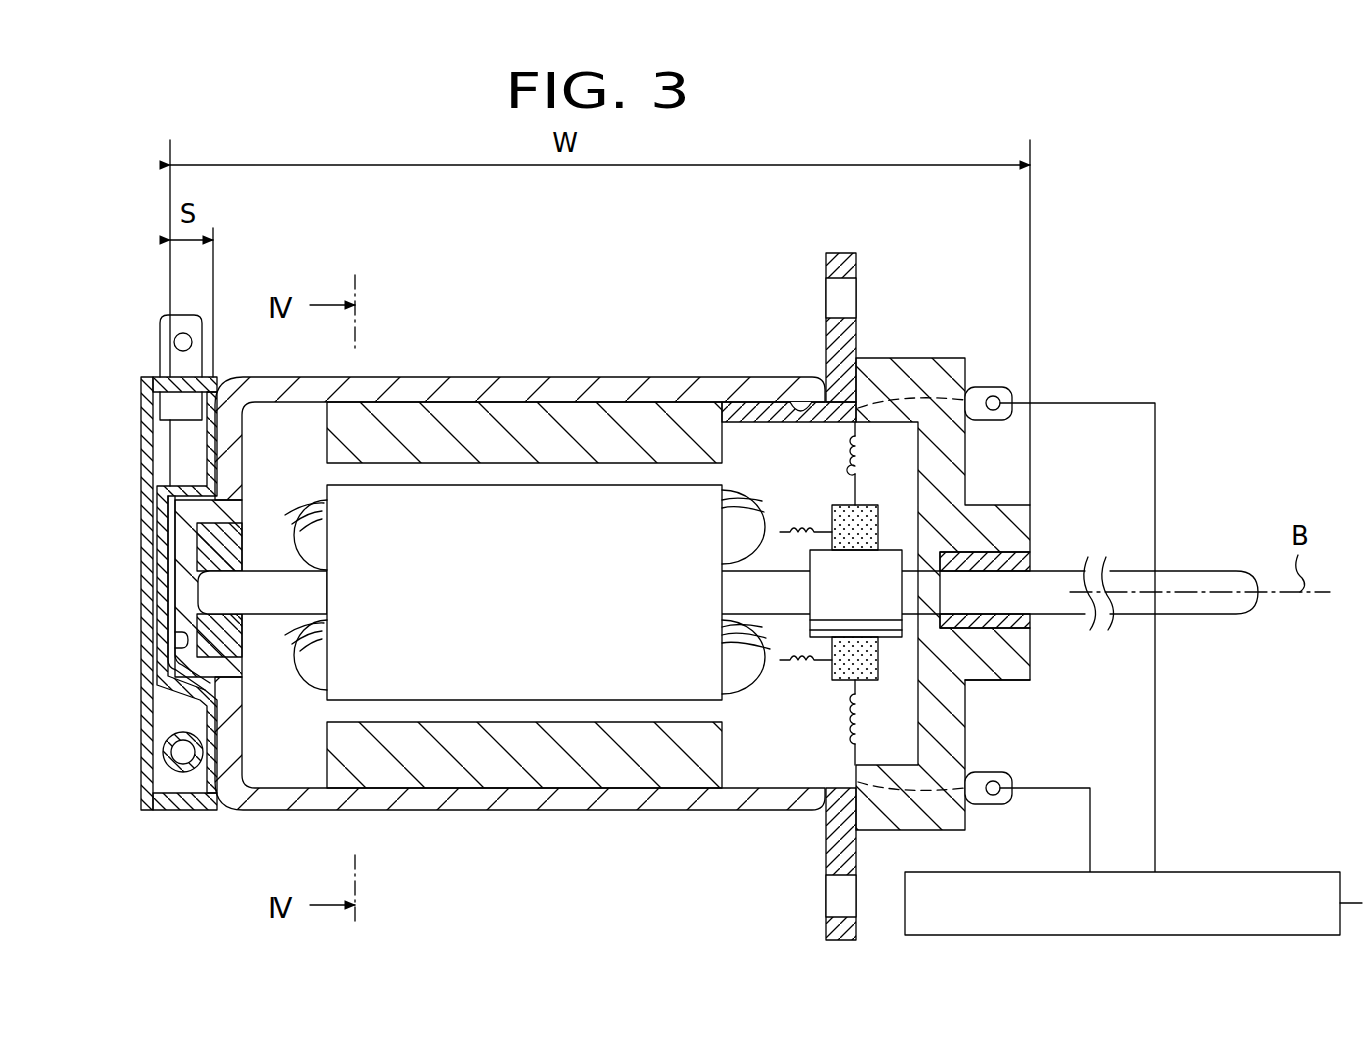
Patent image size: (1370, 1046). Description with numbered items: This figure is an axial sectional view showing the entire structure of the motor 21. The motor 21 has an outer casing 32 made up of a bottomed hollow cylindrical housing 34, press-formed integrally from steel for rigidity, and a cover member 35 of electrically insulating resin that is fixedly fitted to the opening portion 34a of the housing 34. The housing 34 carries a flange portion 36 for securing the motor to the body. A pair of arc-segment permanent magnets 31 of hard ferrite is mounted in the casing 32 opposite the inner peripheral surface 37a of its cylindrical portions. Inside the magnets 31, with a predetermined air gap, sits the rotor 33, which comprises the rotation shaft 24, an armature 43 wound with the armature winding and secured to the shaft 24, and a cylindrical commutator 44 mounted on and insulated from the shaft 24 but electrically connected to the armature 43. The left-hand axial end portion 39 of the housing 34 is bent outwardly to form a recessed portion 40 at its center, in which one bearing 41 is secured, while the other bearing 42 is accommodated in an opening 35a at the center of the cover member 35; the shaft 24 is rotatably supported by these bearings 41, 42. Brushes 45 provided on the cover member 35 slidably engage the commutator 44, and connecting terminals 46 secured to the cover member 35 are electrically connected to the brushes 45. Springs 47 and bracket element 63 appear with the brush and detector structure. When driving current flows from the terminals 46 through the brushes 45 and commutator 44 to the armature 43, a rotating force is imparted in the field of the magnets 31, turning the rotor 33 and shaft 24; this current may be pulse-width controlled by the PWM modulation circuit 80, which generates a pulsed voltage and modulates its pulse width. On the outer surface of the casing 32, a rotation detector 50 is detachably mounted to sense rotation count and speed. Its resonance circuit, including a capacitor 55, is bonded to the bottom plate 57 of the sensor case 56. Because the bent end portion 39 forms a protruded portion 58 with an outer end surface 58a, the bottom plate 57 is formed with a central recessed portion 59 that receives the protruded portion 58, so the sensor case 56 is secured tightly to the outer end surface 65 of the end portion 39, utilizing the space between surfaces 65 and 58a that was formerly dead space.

The motor 21 is at (1075, 248).
The rotation shaft 24 is at (272, 571).
The permanent magnets 31 is at (503, 400).
The outer casing 32 is at (400, 377).
The rotor 33 is at (665, 470).
The housing 34 is at (596, 400).
The opening portion 34a is at (790, 400).
The cover member 35 is at (968, 450).
The opening 35a is at (1035, 640).
The flange portion 36 is at (857, 258).
The inner peripheral surface 37a is at (420, 412).
The axial end portion 39 is at (243, 742).
The recessed portion 40 is at (243, 520).
The bearing 41 is at (243, 620).
The bearing 42 is at (1035, 565).
The armature 43 is at (524, 592).
The commutator 44 is at (895, 550).
The brushes 45 is at (832, 510).
The connecting terminals 46 is at (987, 385).
The brush spring 47 is at (862, 446).
The rotation detector 50 is at (153, 373).
The capacitor 55 is at (155, 765).
The sensor case 56 is at (175, 812).
The bottom plate 57 is at (143, 440).
The protruded portion 58 is at (183, 588).
The outer end surface 58a is at (168, 547).
The central recessed portion 59 is at (178, 643).
The bracket frame 63 is at (200, 462).
The outer end surface 65 is at (152, 715).
The PWM modulation circuit 80 is at (1178, 872).